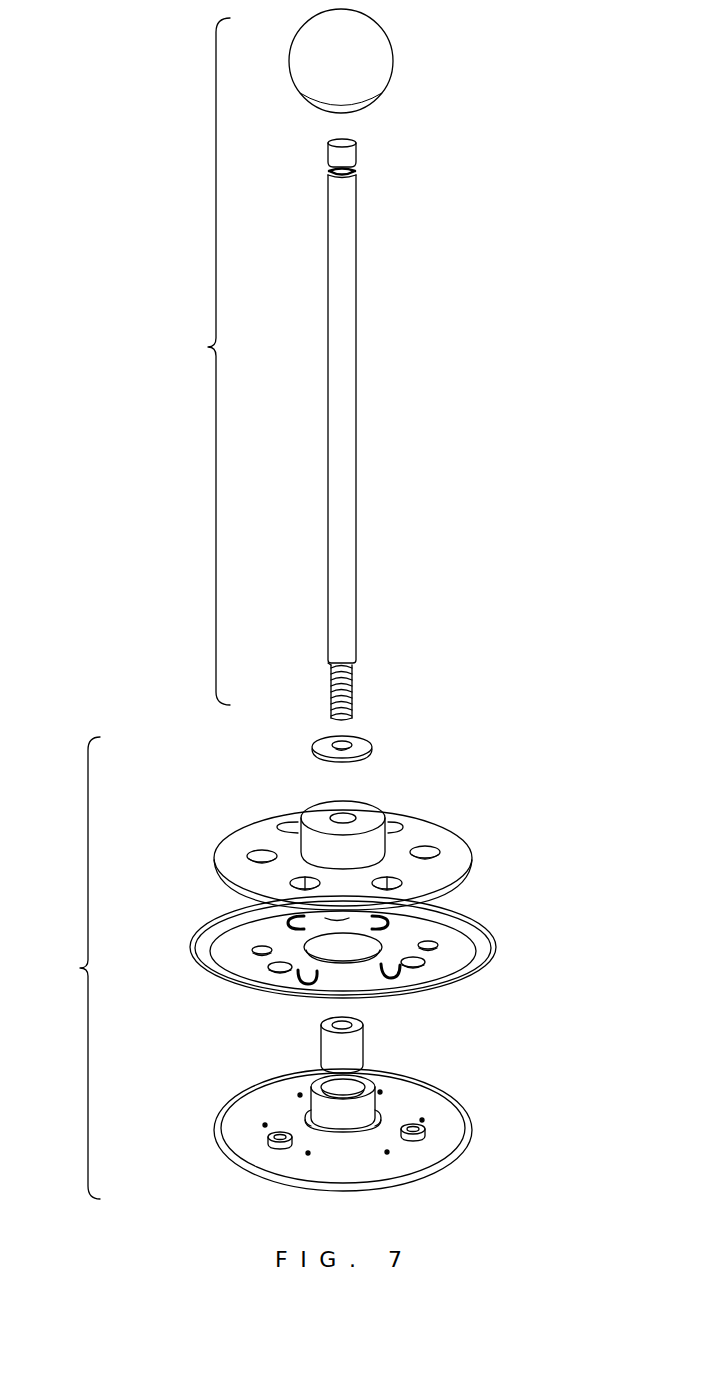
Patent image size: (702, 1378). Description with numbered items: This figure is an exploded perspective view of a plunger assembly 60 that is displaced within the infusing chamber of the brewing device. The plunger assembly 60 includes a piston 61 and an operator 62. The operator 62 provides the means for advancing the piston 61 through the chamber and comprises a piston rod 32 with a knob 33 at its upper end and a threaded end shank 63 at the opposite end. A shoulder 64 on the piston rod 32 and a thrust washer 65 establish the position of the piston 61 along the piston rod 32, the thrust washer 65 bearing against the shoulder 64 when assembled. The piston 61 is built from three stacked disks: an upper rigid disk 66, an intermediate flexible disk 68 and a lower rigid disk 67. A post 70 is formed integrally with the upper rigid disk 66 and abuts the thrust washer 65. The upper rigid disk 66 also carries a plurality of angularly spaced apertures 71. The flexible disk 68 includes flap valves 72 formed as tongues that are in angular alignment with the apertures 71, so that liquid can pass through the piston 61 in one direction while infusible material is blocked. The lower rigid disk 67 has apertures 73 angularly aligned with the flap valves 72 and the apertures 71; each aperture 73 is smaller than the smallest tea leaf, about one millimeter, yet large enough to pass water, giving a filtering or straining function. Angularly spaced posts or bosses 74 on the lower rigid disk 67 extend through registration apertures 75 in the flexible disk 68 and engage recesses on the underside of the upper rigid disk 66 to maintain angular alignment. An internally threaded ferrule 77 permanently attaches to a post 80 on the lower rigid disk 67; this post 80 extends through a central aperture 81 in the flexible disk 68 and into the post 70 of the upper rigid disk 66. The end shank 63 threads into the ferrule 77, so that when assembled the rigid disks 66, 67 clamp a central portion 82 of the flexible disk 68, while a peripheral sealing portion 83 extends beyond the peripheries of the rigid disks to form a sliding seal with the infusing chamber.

The plunger assembly 60 is at (160, 177).
The piston 61 is at (71, 968).
The operator 62 is at (201, 361).
The knob 33 is at (385, 58).
The piston rod 32 is at (352, 290).
The threaded end shank 63 is at (348, 688).
The shoulder 64 is at (328, 666).
The thrust washer 65 is at (364, 742).
The upper rigid disk 66 is at (413, 825).
The post 70 is at (320, 810).
The apertures 71 is at (305, 878).
The intermediate flexible disk 68 is at (447, 940).
The peripheral sealing portion 83 is at (457, 910).
The central aperture 81 is at (350, 947).
The flap valves 72 is at (295, 972).
The central portion 82 is at (438, 947).
The registration apertures 75 is at (425, 965).
The internally threaded ferrule 77 is at (345, 1052).
The post 80 is at (360, 1102).
The lower rigid disk 67 is at (438, 1115).
The apertures 73 is at (265, 1123).
The posts or bosses 74 is at (278, 1150).